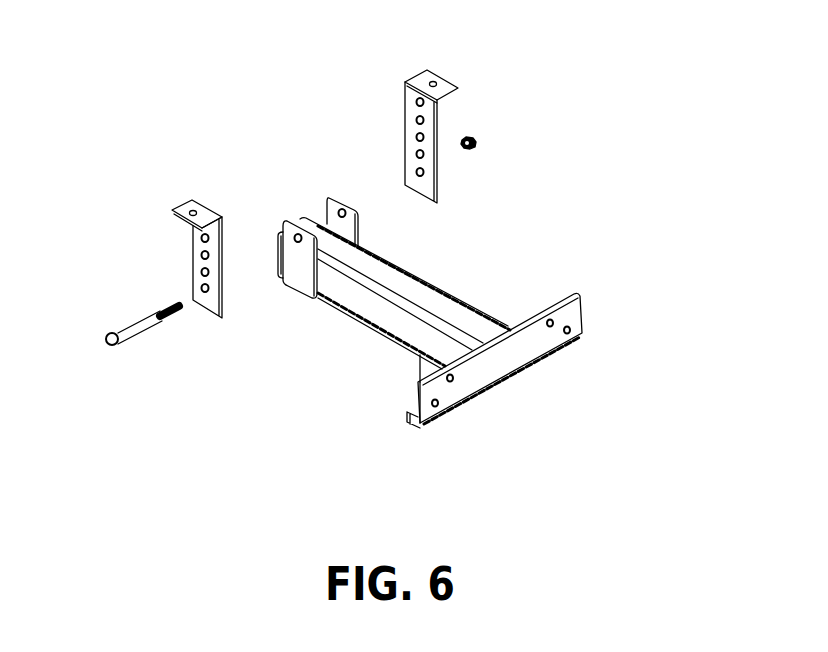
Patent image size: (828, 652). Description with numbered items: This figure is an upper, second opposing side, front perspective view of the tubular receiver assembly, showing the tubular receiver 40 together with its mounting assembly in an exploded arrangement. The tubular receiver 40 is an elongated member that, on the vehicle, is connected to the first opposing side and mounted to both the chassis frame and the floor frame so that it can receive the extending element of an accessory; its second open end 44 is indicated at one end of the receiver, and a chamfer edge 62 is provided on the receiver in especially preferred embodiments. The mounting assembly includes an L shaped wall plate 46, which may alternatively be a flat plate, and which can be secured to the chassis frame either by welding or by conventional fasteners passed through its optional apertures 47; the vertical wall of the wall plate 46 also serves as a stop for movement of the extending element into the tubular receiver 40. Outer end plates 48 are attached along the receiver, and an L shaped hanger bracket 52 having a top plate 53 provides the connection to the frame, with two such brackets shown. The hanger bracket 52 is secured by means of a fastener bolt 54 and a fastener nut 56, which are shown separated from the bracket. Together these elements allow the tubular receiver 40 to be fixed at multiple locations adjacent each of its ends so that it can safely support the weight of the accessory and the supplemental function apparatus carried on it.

The tubular receiver 40 is at (474, 354).
The second open end 44 is at (320, 185).
The L shaped wall plate 46 is at (550, 393).
The apertures 47 is at (452, 381).
The outer end plates 48 is at (295, 263).
The L shaped hanger bracket 52 is at (342, 207).
The top plate 53 is at (424, 79).
The fastener bolt 54 is at (138, 328).
The fastener nut 56 is at (478, 143).
The chamfer edge 62 is at (412, 308).